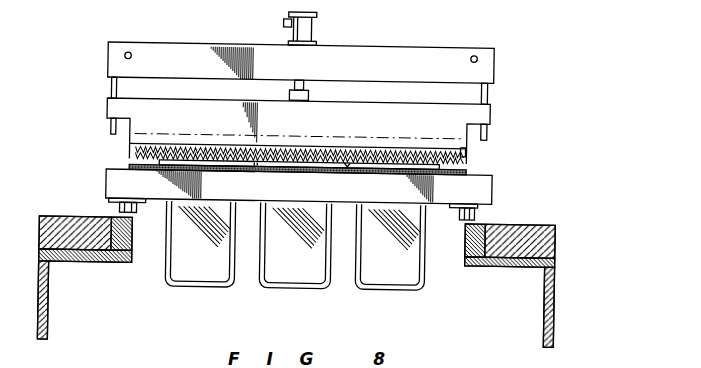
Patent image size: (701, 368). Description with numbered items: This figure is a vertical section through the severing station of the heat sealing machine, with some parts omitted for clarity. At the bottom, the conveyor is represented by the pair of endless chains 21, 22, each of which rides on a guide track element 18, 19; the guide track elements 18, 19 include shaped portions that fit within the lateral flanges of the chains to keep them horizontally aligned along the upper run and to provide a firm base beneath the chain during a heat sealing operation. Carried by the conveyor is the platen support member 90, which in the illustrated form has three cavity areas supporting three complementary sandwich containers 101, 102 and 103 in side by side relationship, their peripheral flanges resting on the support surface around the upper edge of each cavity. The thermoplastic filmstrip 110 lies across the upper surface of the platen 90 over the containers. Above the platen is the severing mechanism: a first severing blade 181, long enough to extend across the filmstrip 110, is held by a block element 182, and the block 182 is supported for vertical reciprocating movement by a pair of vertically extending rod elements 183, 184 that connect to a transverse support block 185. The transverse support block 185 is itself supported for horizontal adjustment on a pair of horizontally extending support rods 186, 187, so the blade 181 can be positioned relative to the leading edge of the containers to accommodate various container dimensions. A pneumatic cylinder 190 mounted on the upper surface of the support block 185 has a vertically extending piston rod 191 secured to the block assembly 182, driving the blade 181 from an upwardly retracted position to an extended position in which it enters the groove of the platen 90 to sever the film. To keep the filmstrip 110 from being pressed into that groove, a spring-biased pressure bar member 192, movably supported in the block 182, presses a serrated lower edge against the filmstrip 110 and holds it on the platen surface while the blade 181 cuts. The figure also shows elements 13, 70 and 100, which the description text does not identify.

The transverse support block 185 is at (378, 50).
The horizontally extending support rod 187 is at (130, 53).
The horizontally extending support rod 186 is at (475, 50).
The pneumatic cylinder 190 is at (313, 31).
The piston rod 191 is at (306, 80).
The vertically extending rod element 183 is at (110, 88).
The vertically extending rod element 184 is at (488, 90).
The block element 182 is at (200, 119).
The first severing blade 181 is at (130, 157).
The pressure bar member 192 is at (468, 146).
The platen support member 90 is at (265, 162).
The sealing plate 100 is at (298, 160).
The thermoplastic filmstrip 110 is at (355, 163).
The support plate 70 is at (500, 180).
The endless chain 22 is at (118, 206).
The endless chain 21 is at (478, 208).
The frame 13 is at (50, 318).
The guide track element 18 is at (134, 235).
The guide track element 19 is at (466, 229).
The sandwich container 103 is at (215, 274).
The sandwich container 102 is at (320, 272).
The sandwich container 101 is at (413, 271).